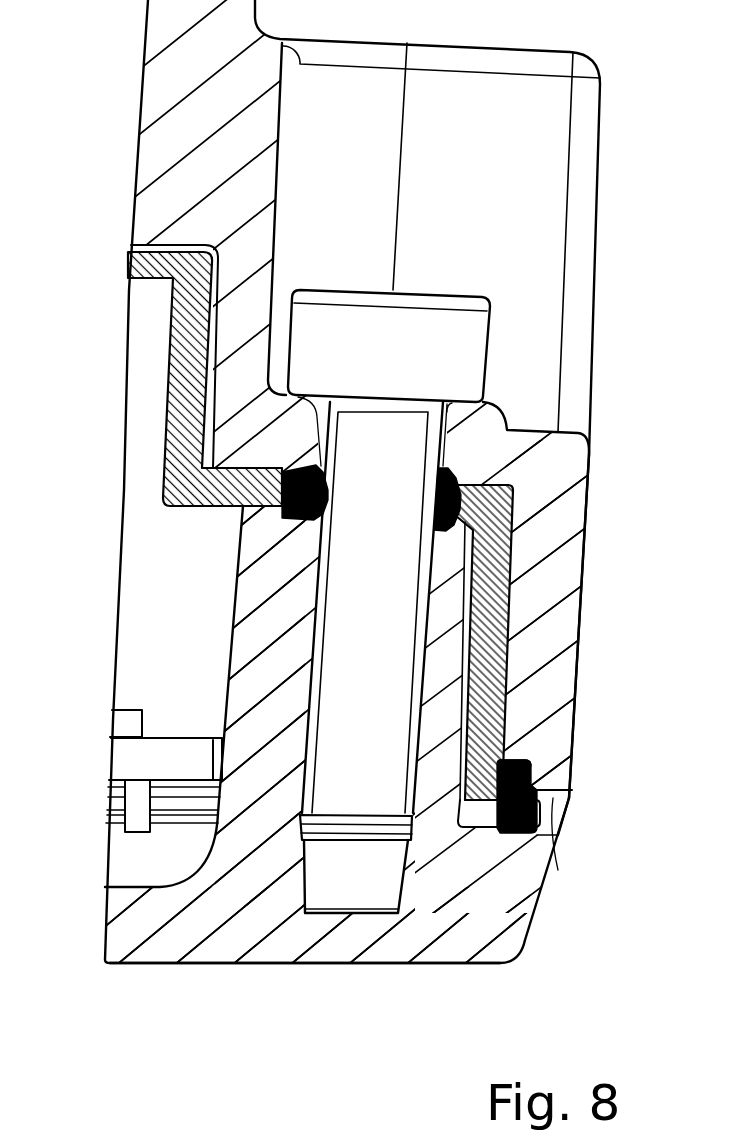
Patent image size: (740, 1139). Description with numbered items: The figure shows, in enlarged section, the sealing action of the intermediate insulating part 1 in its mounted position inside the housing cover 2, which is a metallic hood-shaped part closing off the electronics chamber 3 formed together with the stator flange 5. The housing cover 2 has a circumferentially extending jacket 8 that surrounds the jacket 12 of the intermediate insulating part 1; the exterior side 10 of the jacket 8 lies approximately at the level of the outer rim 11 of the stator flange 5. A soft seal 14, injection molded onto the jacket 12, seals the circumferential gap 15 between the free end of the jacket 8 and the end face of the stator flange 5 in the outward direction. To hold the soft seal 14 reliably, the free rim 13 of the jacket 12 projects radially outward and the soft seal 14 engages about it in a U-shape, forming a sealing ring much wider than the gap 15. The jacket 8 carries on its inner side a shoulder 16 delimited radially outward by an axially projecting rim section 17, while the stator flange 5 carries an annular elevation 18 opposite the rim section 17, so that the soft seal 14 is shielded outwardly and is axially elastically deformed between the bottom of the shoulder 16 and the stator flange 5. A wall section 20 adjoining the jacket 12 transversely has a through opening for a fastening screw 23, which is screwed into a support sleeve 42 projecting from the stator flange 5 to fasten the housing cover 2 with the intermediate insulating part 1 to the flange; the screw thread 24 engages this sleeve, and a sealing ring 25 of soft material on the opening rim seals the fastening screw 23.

The intermediate insulating part 1 is at (156, 384).
The housing cover 2 is at (126, 144).
The electronics chamber 3 is at (166, 561).
The stator flange 5 is at (124, 921).
The jacket 8 is at (547, 694).
The exterior side 10 is at (583, 637).
The outer rim 11 is at (548, 831).
The jacket 12 is at (485, 635).
The free rim 13 is at (481, 830).
The soft seal 14 is at (558, 870).
The circumferential gap 15 is at (567, 797).
The shoulder 16 is at (517, 758).
The rim section 17 is at (552, 777).
The elevation 18 is at (553, 841).
The wall section 20 is at (560, 437).
The fastening screw 23 is at (350, 780).
The thread 24 is at (303, 787).
The sealing ring 25 is at (446, 474).
The support sleeve 42 is at (272, 626).